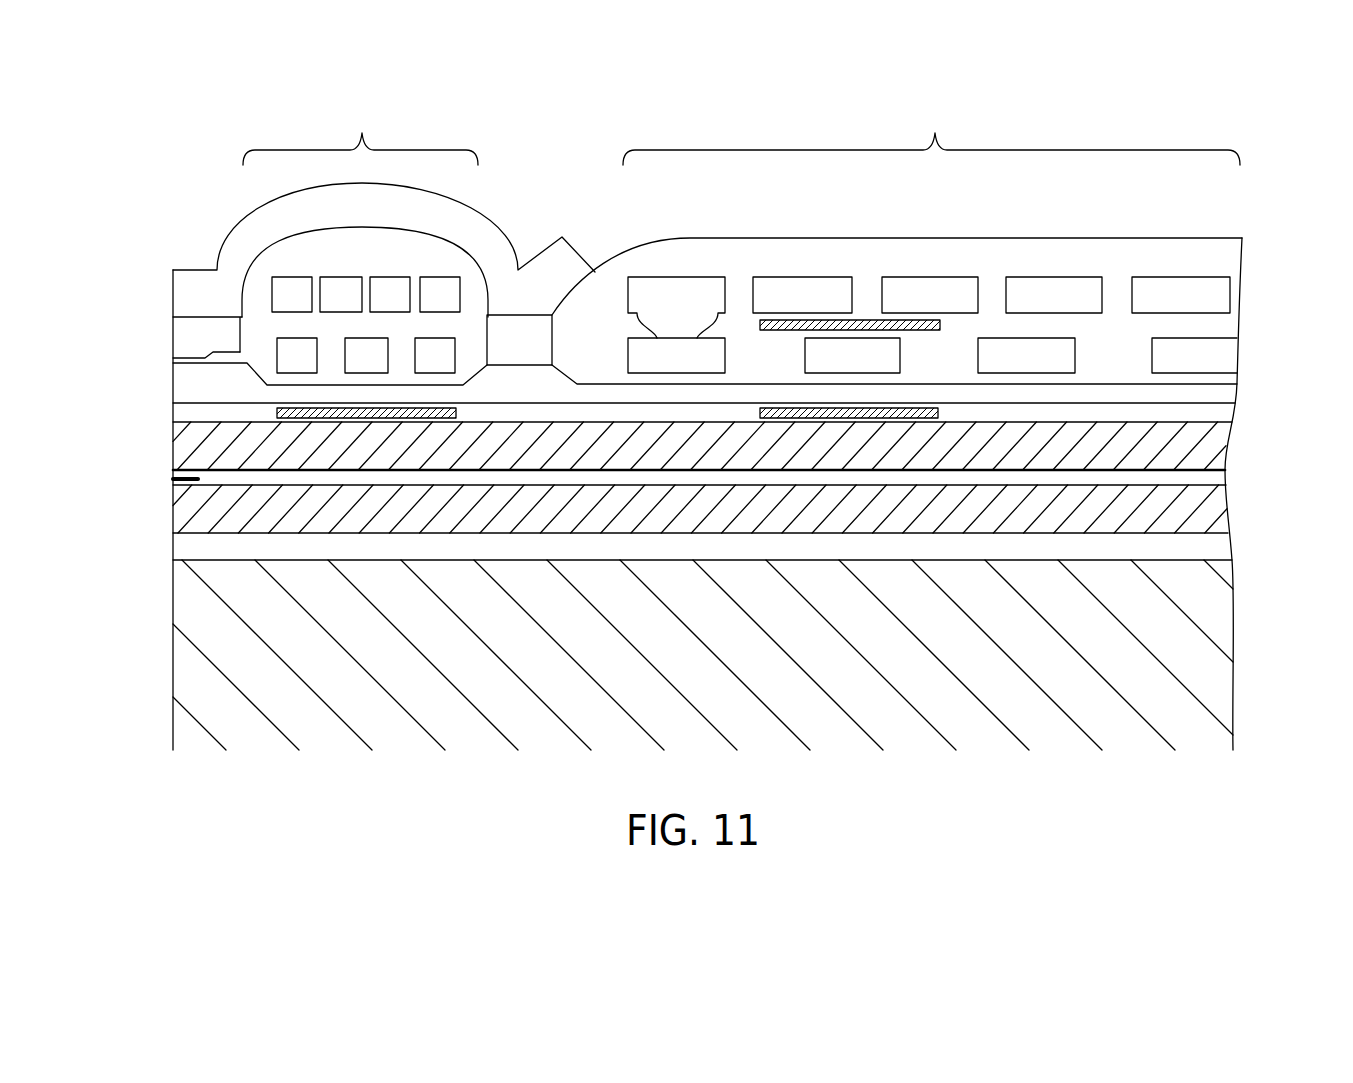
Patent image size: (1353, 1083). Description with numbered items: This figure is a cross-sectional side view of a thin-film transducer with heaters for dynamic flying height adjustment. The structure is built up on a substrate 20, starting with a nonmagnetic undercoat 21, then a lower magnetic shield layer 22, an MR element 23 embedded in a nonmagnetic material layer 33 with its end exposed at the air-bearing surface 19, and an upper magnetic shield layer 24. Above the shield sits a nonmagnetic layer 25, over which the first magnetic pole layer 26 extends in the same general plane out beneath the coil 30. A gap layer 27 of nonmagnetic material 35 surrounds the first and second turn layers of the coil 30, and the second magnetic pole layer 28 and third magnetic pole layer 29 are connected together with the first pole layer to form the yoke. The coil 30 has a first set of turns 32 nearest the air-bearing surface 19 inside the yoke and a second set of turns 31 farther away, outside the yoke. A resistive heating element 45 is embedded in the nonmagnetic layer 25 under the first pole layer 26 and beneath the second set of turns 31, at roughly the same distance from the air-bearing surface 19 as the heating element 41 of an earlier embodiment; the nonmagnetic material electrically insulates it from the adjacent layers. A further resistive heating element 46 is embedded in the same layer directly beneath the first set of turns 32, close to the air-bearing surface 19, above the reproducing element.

The air-bearing surface 19 is at (173, 733).
The substrate 20 is at (420, 672).
The undercoat 21 is at (185, 548).
The lower magnetic shield layer 22 is at (173, 509).
The MR element 23 is at (173, 477).
The upper magnetic shield layer 24 is at (173, 447).
The nonmagnetic layer 25 is at (183, 415).
The first magnetic pole layer 26 is at (173, 382).
The gap layer 27 is at (178, 359).
The second magnetic pole layer 28 is at (173, 335).
The third magnetic pole layer 29 is at (173, 293).
The coil 30 is at (1208, 295).
The second set of turns 31 is at (931, 132).
The first set of turns 32 is at (360, 132).
The nonmagnetic material layer 33 is at (1215, 478).
The nonmagnetic material 35 is at (376, 268).
The heating element 41 is at (760, 323).
The resistive heating element 45 is at (938, 410).
The resistive heating element 46 is at (468, 408).